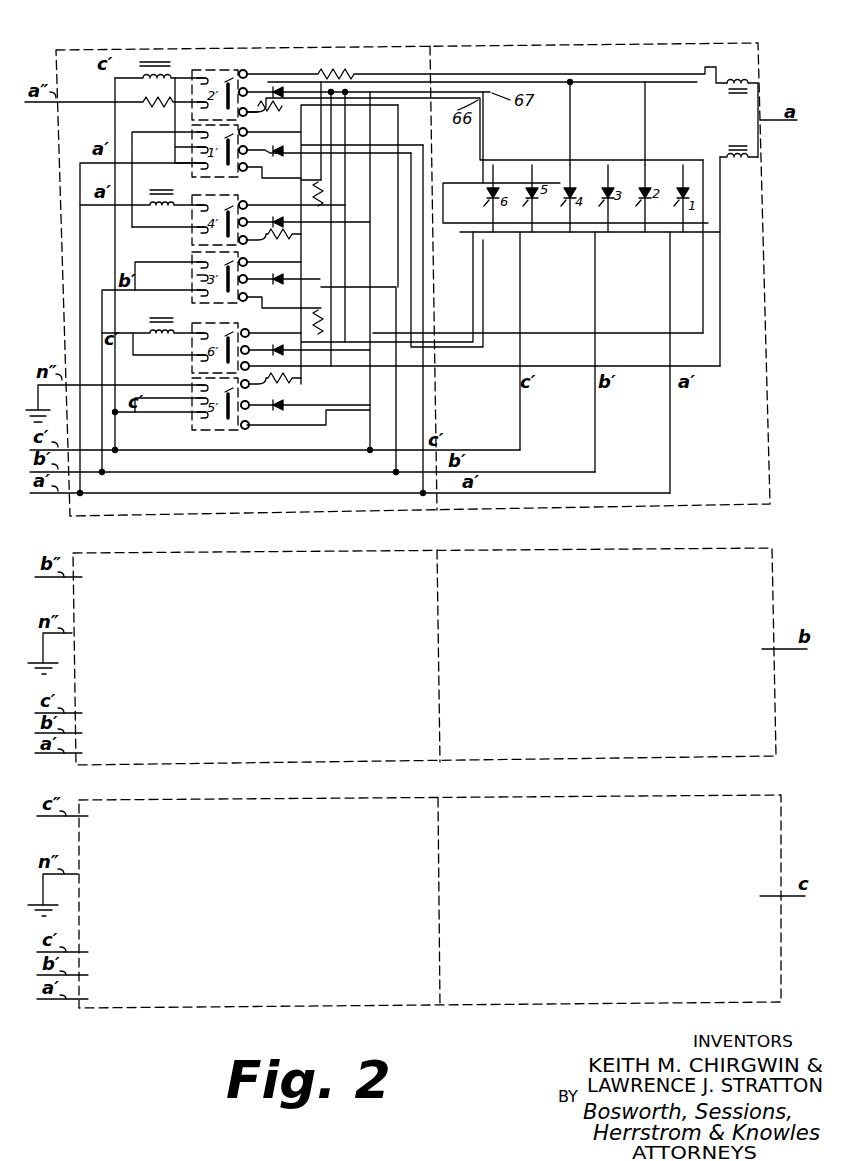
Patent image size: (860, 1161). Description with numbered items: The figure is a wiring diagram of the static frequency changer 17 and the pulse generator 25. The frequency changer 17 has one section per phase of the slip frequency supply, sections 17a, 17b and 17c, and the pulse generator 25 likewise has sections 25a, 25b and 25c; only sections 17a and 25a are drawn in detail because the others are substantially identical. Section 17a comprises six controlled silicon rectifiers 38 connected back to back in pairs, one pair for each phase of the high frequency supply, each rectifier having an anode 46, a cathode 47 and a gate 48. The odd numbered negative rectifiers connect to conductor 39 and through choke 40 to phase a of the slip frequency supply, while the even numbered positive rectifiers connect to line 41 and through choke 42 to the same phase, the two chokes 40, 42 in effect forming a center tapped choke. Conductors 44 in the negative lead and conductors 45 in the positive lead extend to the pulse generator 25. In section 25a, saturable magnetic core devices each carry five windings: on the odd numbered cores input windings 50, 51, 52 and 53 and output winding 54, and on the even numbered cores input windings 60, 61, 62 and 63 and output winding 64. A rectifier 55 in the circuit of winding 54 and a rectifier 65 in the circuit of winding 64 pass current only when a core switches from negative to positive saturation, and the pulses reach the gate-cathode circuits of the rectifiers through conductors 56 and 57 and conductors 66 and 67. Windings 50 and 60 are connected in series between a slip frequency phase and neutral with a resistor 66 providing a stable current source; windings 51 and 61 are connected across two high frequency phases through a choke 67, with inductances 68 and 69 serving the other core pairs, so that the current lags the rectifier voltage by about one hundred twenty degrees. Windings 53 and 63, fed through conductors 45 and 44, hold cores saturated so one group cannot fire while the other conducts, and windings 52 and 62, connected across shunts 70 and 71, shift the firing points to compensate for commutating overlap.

The static frequency changer 17 is at (606, 46).
The frequency changer section for phase a 17a is at (721, 316).
The frequency changer section for phase b 17b is at (759, 698).
The frequency changer section for phase c 17c is at (763, 943).
The pulse generator 25 is at (385, 50).
The pulse generator section for phase a 25a is at (308, 430).
The pulse generator section for phase b 25b is at (424, 656).
The pulse generator section for phase c 25c is at (430, 901).
The controlled silicon rectifiers 38 is at (518, 175).
The conductor 39 is at (695, 148).
The choke 40 is at (726, 162).
The line 41 is at (658, 84).
The choke 42 is at (748, 80).
The conductors in negative rectifier lead 44 is at (714, 225).
The conductors in positive rectifier lead 45 is at (706, 84).
The anode 46 is at (538, 232).
The cathode 47 is at (612, 203).
The gate 48 is at (650, 185).
The input winding 50 is at (170, 268).
The input winding 51 is at (180, 418).
The input winding 52 is at (252, 255).
The input winding 53 is at (254, 314).
The output winding 54 is at (253, 305).
The rectifier 55 is at (360, 244).
The conductor 56 is at (650, 232).
The conductor 57 is at (423, 292).
The input winding 60 is at (190, 358).
The input winding 61 is at (142, 200).
The input winding 62 is at (258, 170).
The input winding 63 is at (255, 90).
The output winding 64 is at (288, 224).
The rectifier 65 is at (288, 245).
The resistor 66 is at (150, 110).
The choke 67 is at (160, 60).
The inductance 68 is at (166, 192).
The inductance 69 is at (166, 318).
The shunt 70 is at (285, 246).
The shunt 71 is at (322, 338).